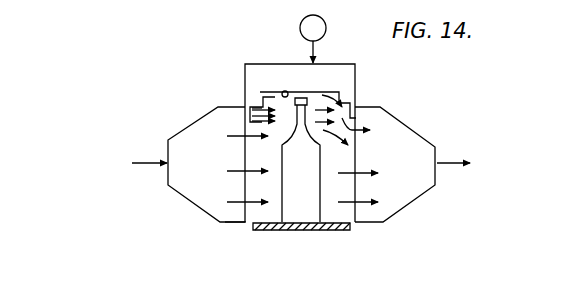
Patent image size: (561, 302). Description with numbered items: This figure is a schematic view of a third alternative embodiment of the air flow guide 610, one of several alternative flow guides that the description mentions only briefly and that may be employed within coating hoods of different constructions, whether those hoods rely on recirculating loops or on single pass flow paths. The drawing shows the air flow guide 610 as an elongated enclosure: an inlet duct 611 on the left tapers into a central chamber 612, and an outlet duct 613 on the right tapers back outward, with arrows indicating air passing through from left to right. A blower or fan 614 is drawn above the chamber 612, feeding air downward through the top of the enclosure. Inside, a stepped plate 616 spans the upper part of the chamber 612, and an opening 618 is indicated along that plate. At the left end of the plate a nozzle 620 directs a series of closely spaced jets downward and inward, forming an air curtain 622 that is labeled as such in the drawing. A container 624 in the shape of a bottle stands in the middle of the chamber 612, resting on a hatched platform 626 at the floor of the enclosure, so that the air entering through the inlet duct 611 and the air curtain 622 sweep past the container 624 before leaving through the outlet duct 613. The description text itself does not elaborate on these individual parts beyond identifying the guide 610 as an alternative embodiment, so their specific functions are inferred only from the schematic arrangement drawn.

The air flow guide 610 is at (192, 115).
The lower inlet wall 611 is at (243, 208).
The treatment chamber 612 is at (360, 92).
The outlet duct 613 is at (363, 212).
The blower 614 is at (316, 25).
The baffle plate 616 is at (339, 85).
The nozzle opening 618 is at (285, 91).
The air curtain nozzle 620 is at (253, 107).
The air curtain 622 is at (250, 103).
The container 624 is at (312, 166).
The conveyor platform 626 is at (293, 226).